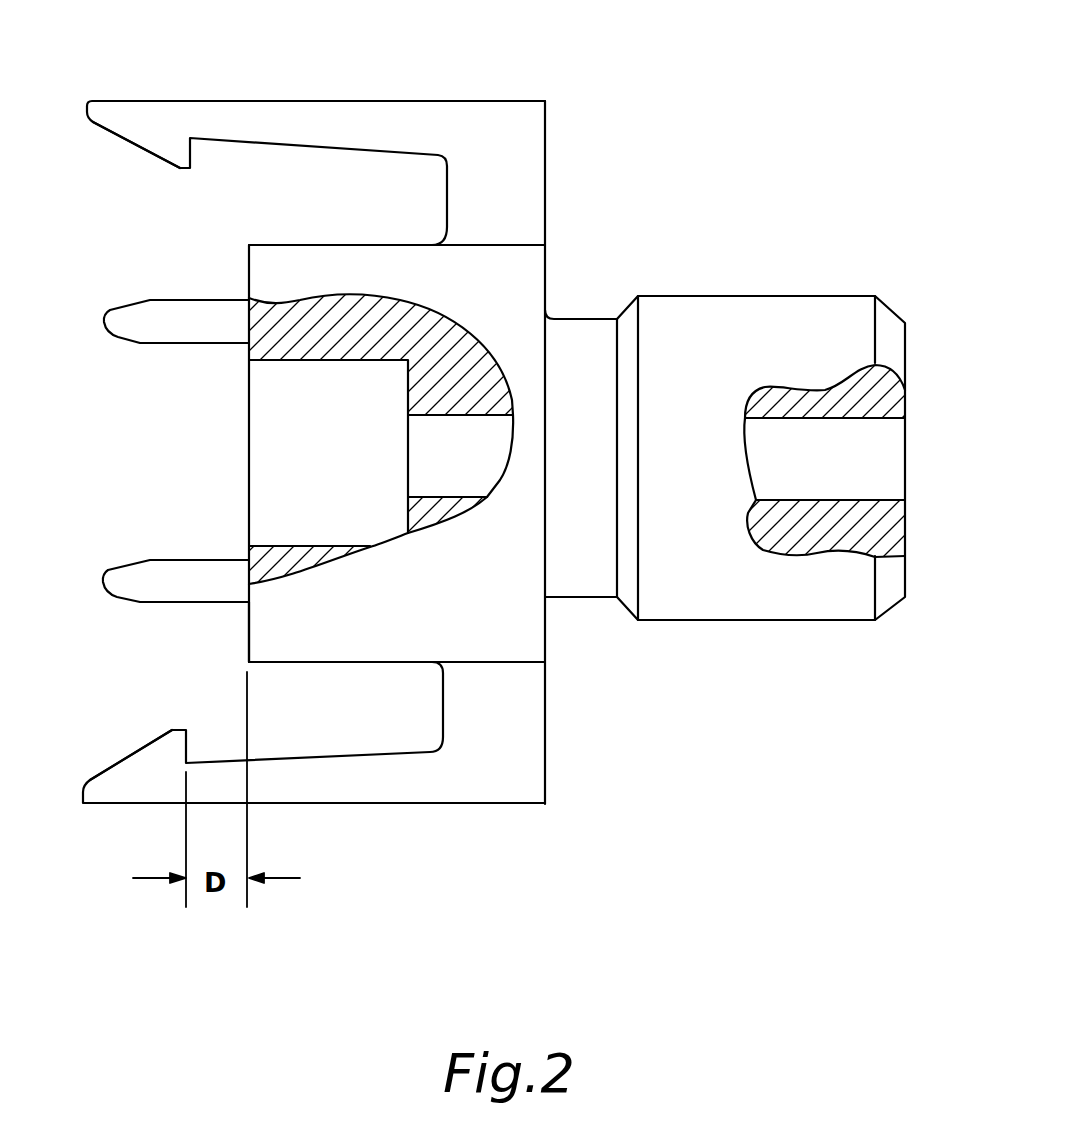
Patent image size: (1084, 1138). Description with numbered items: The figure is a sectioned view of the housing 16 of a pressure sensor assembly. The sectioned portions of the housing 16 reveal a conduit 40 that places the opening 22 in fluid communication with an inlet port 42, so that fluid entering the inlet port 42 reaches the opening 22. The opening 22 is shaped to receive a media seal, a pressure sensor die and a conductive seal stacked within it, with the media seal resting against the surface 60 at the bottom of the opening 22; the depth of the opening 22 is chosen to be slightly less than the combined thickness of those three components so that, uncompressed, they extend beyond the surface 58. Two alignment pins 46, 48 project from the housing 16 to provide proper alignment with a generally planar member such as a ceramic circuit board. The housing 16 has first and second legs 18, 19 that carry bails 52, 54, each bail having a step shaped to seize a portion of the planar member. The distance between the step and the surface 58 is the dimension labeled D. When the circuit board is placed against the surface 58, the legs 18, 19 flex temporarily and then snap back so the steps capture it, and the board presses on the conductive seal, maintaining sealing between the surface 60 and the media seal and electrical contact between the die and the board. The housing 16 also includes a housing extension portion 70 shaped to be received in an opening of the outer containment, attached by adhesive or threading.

The housing 16 is at (548, 262).
The first leg 18 is at (325, 118).
The second leg 19 is at (383, 782).
The opening 22 is at (305, 518).
The conduit 40 is at (840, 462).
The inlet port 42 is at (905, 487).
The alignment pin 46 is at (147, 317).
The alignment pin 48 is at (155, 574).
The bail 52 is at (145, 122).
The bail 54 is at (148, 776).
The surface 58 is at (247, 625).
The surface 60 is at (408, 392).
The housing extension portion 70 is at (688, 345).